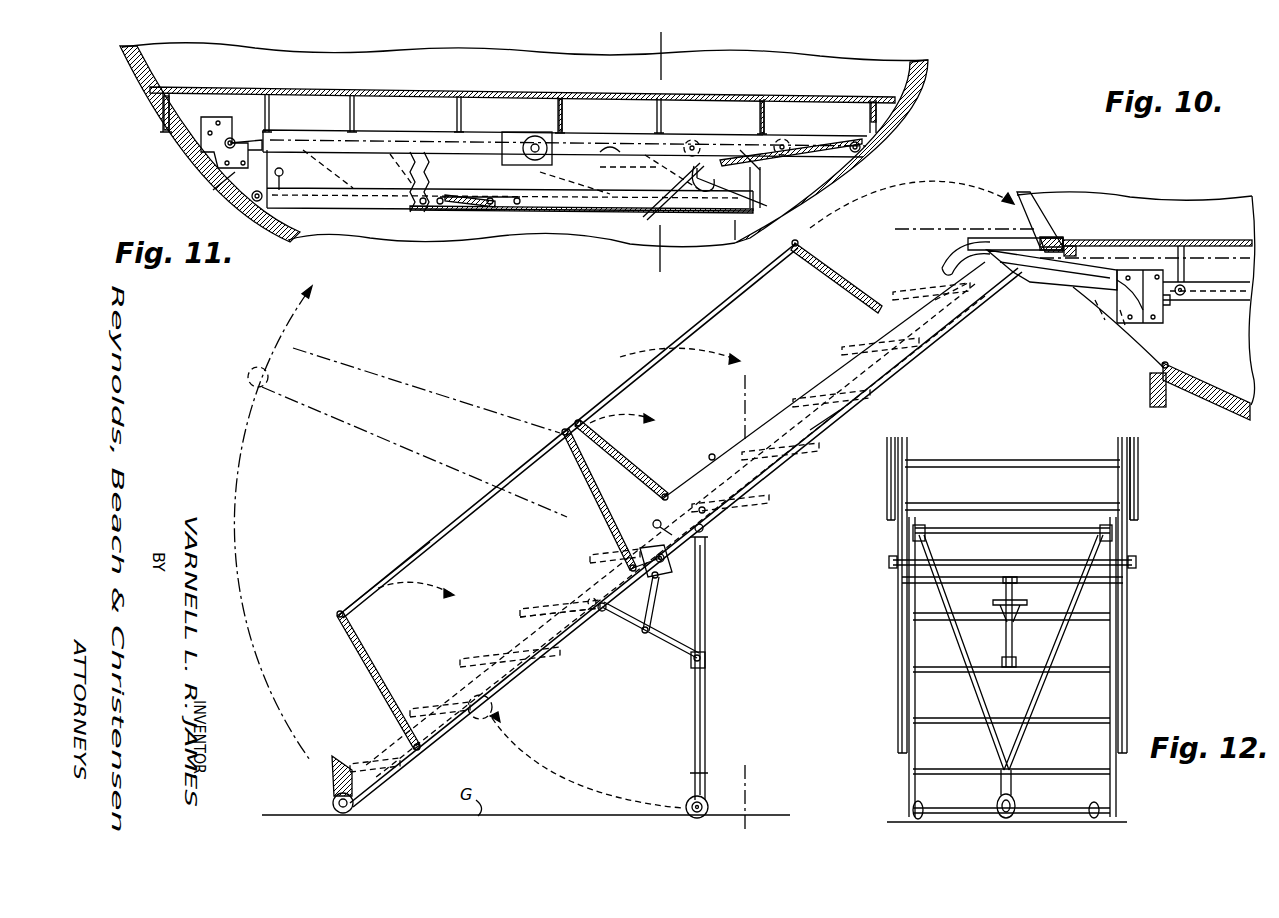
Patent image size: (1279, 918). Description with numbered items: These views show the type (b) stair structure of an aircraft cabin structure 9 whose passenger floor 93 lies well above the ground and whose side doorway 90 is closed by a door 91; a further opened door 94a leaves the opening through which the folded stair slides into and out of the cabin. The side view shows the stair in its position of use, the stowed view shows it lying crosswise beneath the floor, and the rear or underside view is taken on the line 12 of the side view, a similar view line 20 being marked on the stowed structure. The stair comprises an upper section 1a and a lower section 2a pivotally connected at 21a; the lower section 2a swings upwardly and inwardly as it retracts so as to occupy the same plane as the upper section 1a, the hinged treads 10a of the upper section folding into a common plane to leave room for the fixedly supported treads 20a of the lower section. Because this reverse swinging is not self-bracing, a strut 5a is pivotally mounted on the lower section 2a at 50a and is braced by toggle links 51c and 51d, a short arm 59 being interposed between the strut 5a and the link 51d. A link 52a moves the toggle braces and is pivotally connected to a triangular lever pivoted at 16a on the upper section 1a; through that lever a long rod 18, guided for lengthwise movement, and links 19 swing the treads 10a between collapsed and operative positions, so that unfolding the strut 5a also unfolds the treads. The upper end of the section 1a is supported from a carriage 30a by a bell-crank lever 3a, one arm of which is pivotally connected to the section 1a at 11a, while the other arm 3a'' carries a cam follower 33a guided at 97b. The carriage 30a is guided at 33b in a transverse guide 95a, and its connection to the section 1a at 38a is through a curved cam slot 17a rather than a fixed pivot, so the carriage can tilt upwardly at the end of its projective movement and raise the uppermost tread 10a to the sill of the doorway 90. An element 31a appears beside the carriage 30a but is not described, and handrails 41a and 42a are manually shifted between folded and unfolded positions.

In FIG. 11, the upper stair section 1a is at (518, 222).
In FIG. 10, the upper stair section 1a is at (850, 331).
In FIG. 12, the upper stair section 1a is at (1142, 502).
In FIG. 11, the lower stair section 2a is at (478, 142).
In FIG. 10, the lower stair section 2a is at (450, 410).
In FIG. 12, the lower stair section 2a is at (903, 686).
In FIG. 11, the bell-crank lever 3a is at (779, 173).
In FIG. 11, the lever arm 3a'' is at (769, 137).
In FIG. 11, the strut 5a is at (510, 140).
In FIG. 10, the strut 5a is at (706, 706).
In FIG. 12, the strut 5a is at (965, 688).
In FIG. 11, the cabin structure 9 is at (922, 78).
In FIG. 10, the cabin structure 9 is at (1230, 405).
In FIG. 11, the treads 10a is at (498, 197).
In FIG. 10, the treads 10a is at (880, 392).
In FIG. 12, the treads 10a is at (988, 460).
In FIG. 11, the pivot connection 11a is at (735, 240).
In FIG. 10, the section line 12 is at (760, 390).
In FIG. 11, the lever pivot 16a is at (252, 202).
In FIG. 10, the lever pivot 16a is at (680, 560).
In FIG. 12, the lever pivot 16a is at (889, 562).
In FIG. 11, the curved cam slot 17a is at (655, 210).
In FIG. 10, the curved cam slot 17a is at (950, 256).
In FIG. 11, the rod 18 is at (423, 206).
In FIG. 10, the rod 18 is at (830, 435).
In FIG. 11, the links 19 is at (470, 208).
In FIG. 10, the links 19 is at (958, 322).
In FIG. 11, the section line 20 is at (676, 47).
In FIG. 10, the treads 20a is at (560, 628).
In FIG. 12, the treads 20a is at (970, 722).
In FIG. 11, the pivotal connection 21a is at (284, 172).
In FIG. 10, the pivotal connection 21a is at (645, 524).
In FIG. 11, the carriage 30a is at (712, 153).
In FIG. 10, the carriage 30a is at (1048, 280).
In FIG. 11, the roller 31a is at (790, 142).
In FIG. 11, the cam follower 33a is at (717, 181).
In FIG. 10, the cam follower 33a is at (1095, 300).
In FIG. 11, the carriage guide point 33b is at (878, 141).
In FIG. 10, the carriage guide point 33b is at (1188, 298).
In FIG. 11, the carriage connection 38a is at (660, 153).
In FIG. 10, the carriage connection 38a is at (987, 240).
In FIG. 10, the handrail 41a is at (705, 326).
In FIG. 10, the handrail 42a is at (428, 536).
In FIG. 12, the handrail 42a is at (898, 600).
In FIG. 11, the strut pivot 50a is at (235, 137).
In FIG. 10, the strut pivot 50a is at (712, 530).
In FIG. 12, the strut pivot 50a is at (1045, 530).
In FIG. 10, the toggle link 51c is at (608, 615).
In FIG. 10, the toggle link 51d is at (680, 642).
In FIG. 12, the toggle link 51d is at (1014, 645).
In FIG. 10, the link 52a is at (650, 620).
In FIG. 12, the link 52a is at (1026, 604).
In FIG. 10, the short arm 59 is at (706, 658).
In FIG. 12, the short arm 59 is at (1016, 660).
In FIG. 10, the doorway 90 is at (1022, 192).
In FIG. 11, the door 91 is at (128, 77).
In FIG. 11, the floor 93 is at (395, 88).
In FIG. 10, the floor 93 is at (1128, 240).
In FIG. 11, the door 94a is at (213, 190).
In FIG. 10, the door 94a is at (1148, 394).
In FIG. 11, the guide 95a is at (630, 154).
In FIG. 10, the guide 95a is at (1238, 302).
In FIG. 11, the cam follower guide 97b is at (200, 138).
In FIG. 10, the cam follower guide 97b is at (1122, 340).